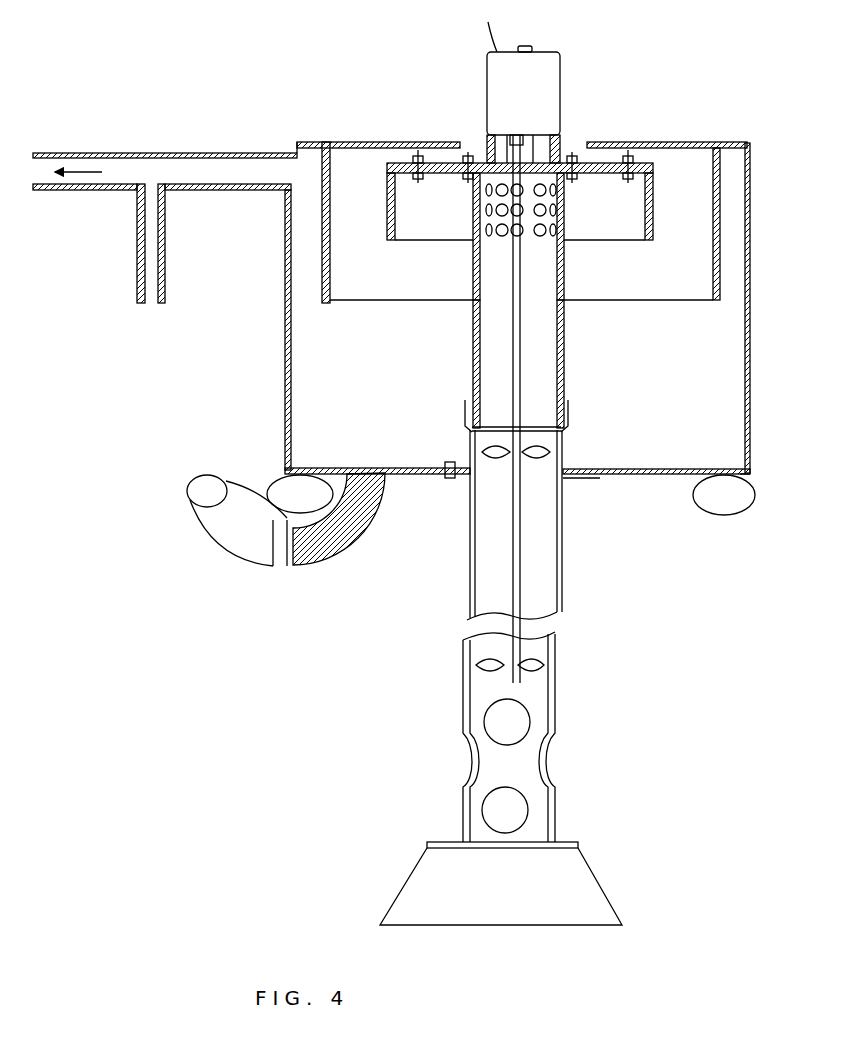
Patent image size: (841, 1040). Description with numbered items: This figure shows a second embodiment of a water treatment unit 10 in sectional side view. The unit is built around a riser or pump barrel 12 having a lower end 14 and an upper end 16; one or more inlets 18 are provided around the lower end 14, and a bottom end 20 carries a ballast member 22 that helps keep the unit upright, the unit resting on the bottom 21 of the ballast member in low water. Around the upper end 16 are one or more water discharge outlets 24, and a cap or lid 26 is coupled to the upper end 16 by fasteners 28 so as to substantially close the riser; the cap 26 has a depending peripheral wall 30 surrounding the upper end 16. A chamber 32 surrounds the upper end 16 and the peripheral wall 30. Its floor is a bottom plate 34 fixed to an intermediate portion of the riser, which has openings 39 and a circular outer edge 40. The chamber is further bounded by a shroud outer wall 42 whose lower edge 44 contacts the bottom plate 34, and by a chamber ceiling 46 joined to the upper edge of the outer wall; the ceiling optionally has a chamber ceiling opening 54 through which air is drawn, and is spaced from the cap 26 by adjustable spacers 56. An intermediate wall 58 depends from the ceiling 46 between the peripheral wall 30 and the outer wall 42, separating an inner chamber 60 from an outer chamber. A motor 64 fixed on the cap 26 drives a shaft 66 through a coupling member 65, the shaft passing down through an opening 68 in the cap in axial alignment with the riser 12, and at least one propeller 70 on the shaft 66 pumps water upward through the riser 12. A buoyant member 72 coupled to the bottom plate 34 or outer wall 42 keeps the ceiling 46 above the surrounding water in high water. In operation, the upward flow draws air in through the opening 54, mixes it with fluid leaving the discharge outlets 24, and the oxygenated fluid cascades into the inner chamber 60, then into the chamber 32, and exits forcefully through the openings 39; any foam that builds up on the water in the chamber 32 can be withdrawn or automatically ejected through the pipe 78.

The water treatment unit 10 is at (702, 105).
The riser or pump barrel 12 is at (560, 552).
The lower end 14 is at (552, 836).
The upper end 16 is at (478, 190).
The inlets 18 is at (490, 722).
The bottom end 20 is at (448, 842).
The bottom 21 is at (518, 930).
The ballast member 22 is at (605, 908).
The water discharge outlets 24 is at (566, 214).
The cap or lid 26 is at (448, 178).
The fasteners 28 is at (470, 165).
The peripheral wall 30 is at (655, 212).
The chamber 32 is at (668, 353).
The chamber floor or bottom plate 34 is at (660, 478).
The openings 39 is at (370, 470).
The outer edge 40 is at (748, 472).
The shroud outer wall 42 is at (284, 276).
The lower edge 44 is at (286, 466).
The chamber ceiling 46 is at (420, 143).
The chamber ceiling opening 54 is at (575, 152).
The spacers 56 is at (638, 157).
The intermediate wall 58 is at (331, 267).
The inner chamber 60 is at (618, 284).
The motor 64 is at (562, 58).
The coupling member 65 is at (516, 145).
The shaft 66 is at (515, 342).
The opening 68 is at (497, 148).
The propeller 70 is at (530, 462).
The buoyant member 72 is at (283, 490).
The pipe 78 is at (252, 160).